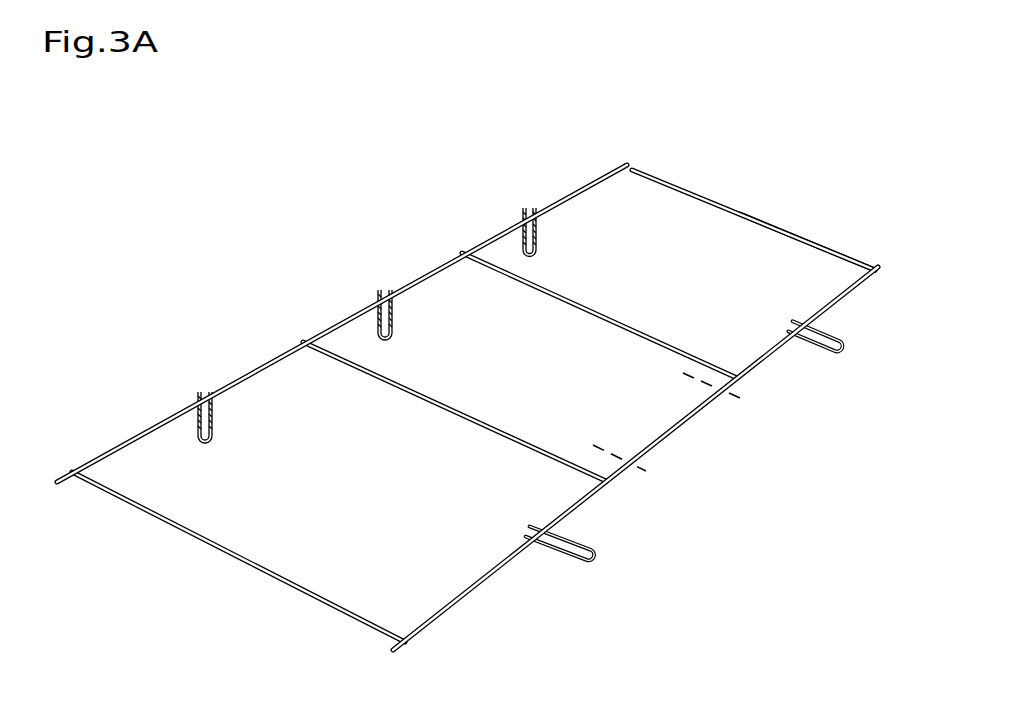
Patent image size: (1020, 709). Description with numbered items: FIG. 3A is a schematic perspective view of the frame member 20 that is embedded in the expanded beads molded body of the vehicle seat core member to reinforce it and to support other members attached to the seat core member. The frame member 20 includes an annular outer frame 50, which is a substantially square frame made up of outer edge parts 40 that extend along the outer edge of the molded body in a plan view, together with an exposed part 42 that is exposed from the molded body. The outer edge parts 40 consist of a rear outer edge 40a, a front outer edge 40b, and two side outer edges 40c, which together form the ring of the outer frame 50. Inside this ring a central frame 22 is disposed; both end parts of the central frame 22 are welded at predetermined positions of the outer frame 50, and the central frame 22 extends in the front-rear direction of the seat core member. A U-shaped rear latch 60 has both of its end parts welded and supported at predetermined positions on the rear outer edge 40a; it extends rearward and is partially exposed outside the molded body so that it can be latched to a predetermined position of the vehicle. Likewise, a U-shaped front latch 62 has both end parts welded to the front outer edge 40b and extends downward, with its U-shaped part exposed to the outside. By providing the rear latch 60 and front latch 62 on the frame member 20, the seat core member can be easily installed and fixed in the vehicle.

The frame member 20 is at (551, 149).
The central frame 22 is at (342, 356).
The outer edge parts 40 is at (467, 385).
The rear outer edge 40a is at (482, 586).
The front outer edge 40b is at (442, 263).
The side outer edges 40c is at (670, 192).
The exposed part 42 is at (681, 425).
The outer frame 50 is at (783, 233).
The rear latch 60 is at (599, 554).
The front latch 62 is at (197, 425).